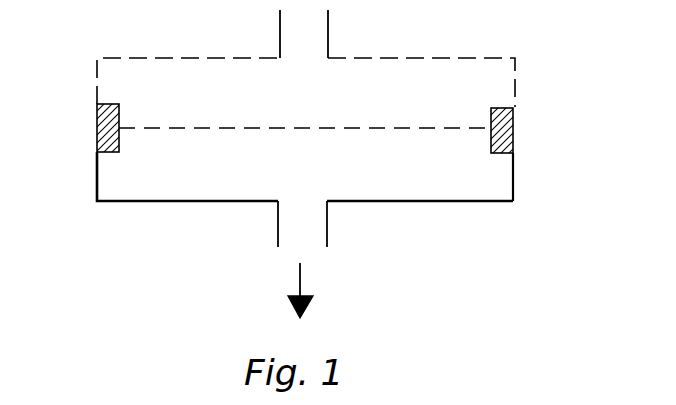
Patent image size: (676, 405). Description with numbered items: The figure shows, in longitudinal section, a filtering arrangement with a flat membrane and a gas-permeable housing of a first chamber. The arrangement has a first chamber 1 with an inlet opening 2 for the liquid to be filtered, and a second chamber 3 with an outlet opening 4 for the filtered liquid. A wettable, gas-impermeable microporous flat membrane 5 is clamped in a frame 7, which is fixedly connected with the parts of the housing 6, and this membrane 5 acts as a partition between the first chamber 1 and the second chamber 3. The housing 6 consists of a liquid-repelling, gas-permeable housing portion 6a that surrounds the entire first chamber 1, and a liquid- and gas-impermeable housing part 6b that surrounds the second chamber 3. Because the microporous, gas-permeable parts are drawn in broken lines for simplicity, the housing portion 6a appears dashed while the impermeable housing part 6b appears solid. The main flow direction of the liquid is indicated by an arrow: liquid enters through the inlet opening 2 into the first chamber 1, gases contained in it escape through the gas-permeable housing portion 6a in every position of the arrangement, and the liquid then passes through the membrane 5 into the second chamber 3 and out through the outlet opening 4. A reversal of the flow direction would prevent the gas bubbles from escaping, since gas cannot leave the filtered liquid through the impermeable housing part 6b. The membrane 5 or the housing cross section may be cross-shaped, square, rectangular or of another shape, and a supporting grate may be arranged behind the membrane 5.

The first chamber 1 is at (118, 72).
The inlet opening 2 is at (297, 43).
The second chamber 3 is at (146, 186).
The lower duct walls 4 is at (298, 198).
The flat membrane 5 is at (377, 129).
The housing 6 is at (462, 117).
The gas-permeable housing portion 6a is at (515, 66).
The liquid- and gas-impermeable housing part 6b is at (515, 172).
The frame 7 is at (500, 136).